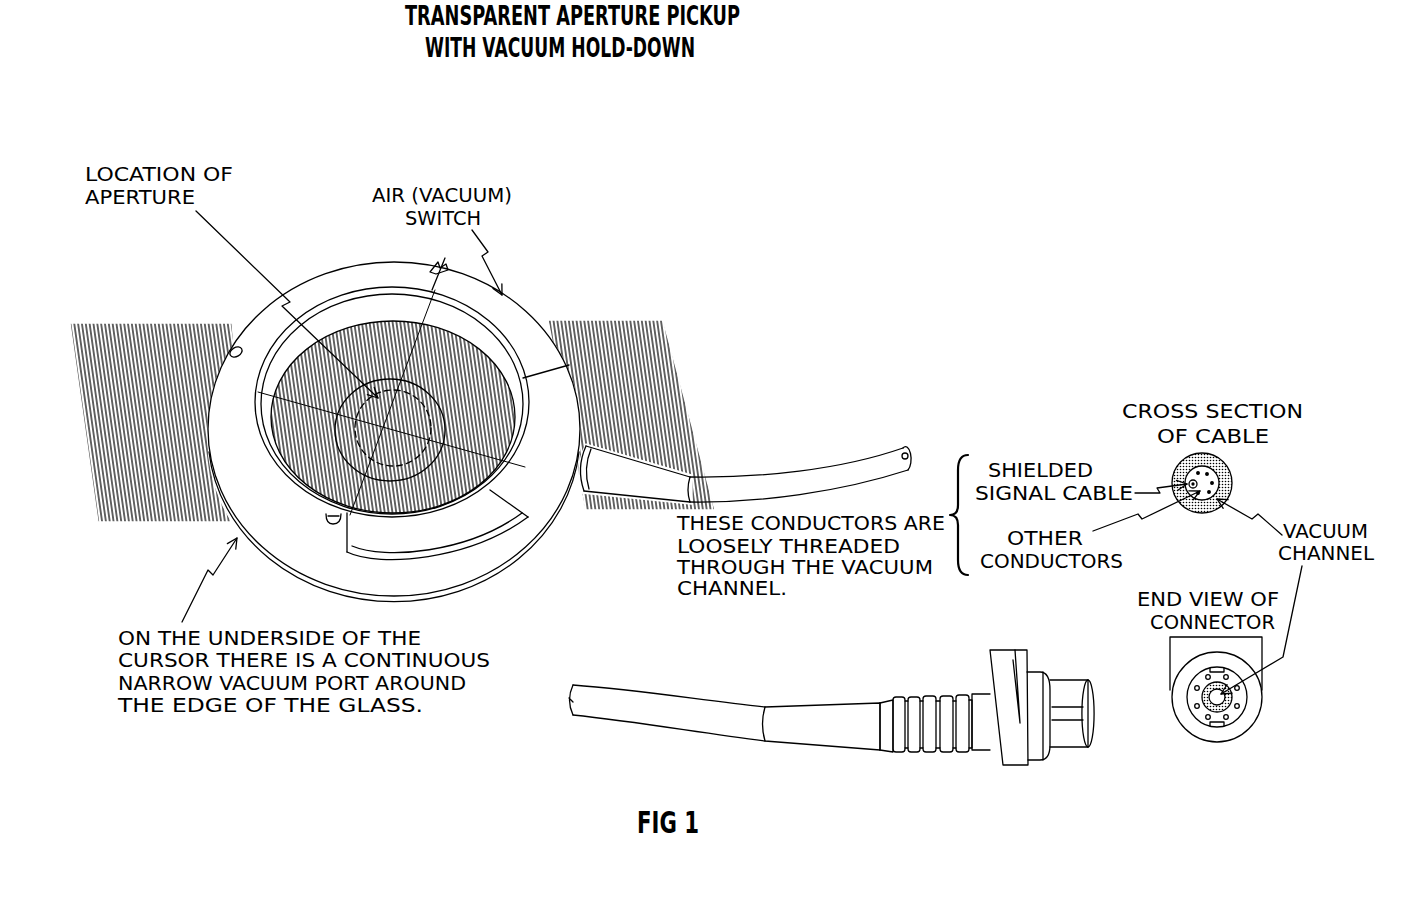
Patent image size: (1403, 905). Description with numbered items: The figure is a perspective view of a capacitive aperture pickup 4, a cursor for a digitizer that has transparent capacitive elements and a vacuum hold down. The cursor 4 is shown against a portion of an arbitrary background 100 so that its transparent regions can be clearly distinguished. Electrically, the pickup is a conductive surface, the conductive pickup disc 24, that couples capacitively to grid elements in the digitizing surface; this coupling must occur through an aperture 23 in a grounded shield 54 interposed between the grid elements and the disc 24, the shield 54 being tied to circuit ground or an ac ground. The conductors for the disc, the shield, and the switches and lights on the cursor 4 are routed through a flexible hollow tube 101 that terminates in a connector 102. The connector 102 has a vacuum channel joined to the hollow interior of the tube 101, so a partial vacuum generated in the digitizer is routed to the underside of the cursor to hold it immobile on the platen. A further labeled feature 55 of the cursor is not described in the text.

The capacitive aperture pickup 4 is at (358, 272).
The aperture 23 is at (380, 397).
The conductive pickup disc 24 is at (368, 441).
The shield 54 is at (447, 360).
The cursor housing ring 55 is at (517, 311).
The arbitrary background 100 is at (683, 375).
The flexible hollow tube 101 is at (806, 470).
The connector 102 is at (1207, 746).